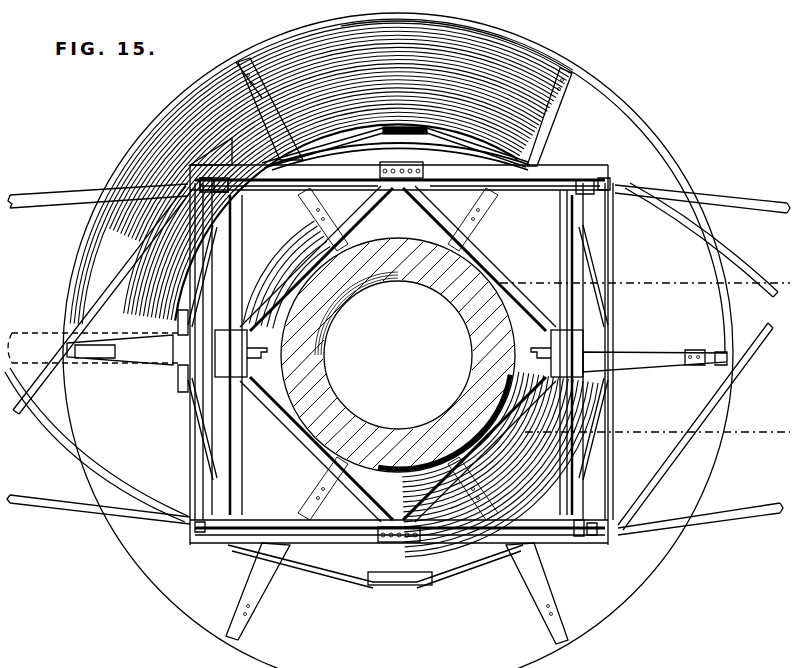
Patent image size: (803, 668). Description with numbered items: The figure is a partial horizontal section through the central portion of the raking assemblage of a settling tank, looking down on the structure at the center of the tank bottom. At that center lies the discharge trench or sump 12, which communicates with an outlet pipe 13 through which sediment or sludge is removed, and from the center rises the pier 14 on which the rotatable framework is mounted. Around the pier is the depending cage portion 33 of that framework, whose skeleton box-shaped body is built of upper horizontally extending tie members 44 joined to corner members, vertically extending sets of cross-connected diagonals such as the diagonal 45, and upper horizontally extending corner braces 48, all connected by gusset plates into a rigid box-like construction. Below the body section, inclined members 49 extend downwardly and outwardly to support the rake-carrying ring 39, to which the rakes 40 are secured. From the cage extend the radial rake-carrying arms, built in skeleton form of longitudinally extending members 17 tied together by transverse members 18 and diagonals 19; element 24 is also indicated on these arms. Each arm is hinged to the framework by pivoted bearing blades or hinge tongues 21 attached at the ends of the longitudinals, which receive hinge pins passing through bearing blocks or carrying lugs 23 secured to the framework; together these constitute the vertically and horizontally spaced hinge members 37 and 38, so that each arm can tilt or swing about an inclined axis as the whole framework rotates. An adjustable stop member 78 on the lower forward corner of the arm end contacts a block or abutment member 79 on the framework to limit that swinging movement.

The discharge trench or sump 12 is at (663, 145).
The outlet pipe 13 is at (27, 340).
The pier 14 is at (428, 278).
The longitudinally extending members 17 is at (58, 195).
The transverse members 18 is at (191, 431).
The diagonals 19 is at (112, 272).
The pivoted bearing blades or hinge tongues 21 is at (204, 182).
The bearing blocks or carrying lugs 23 is at (223, 182).
The curved struts 24 is at (742, 260).
The depending cage portion 33 is at (399, 407).
The hinge member 37 is at (606, 144).
The hinge member 38 is at (222, 168).
The rake-carrying ring 39 is at (394, 582).
The rakes 40 is at (258, 76).
The upper horizontally extending tie members 44 is at (447, 178).
The diagonal 45 is at (470, 186).
The upper horizontally extending corner braces 48 is at (364, 224).
The inclined members 49 is at (340, 152).
The adjustable stop member 78 is at (592, 535).
The block or abutment member 79 is at (578, 536).